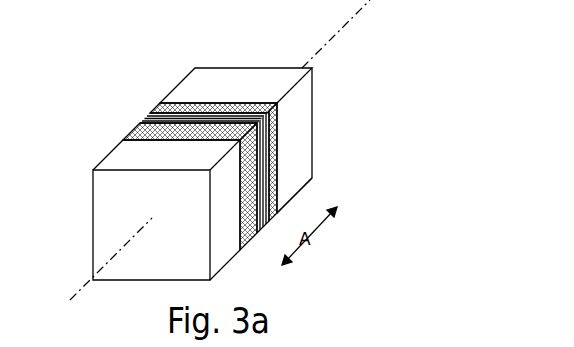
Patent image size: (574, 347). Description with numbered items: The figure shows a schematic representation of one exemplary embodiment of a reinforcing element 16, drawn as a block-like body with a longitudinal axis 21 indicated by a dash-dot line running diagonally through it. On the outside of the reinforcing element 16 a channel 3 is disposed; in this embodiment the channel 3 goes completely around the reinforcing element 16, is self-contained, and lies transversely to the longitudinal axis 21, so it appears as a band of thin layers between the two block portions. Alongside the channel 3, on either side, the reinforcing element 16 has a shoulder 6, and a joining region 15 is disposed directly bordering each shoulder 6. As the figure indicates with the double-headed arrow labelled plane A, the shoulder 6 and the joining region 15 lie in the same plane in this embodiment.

The channel 3 is at (197, 110).
The shoulder 6 is at (141, 121).
The joining region 15 is at (192, 163).
The reinforcing element 16 is at (303, 98).
The longitudinal axis 21 is at (344, 24).